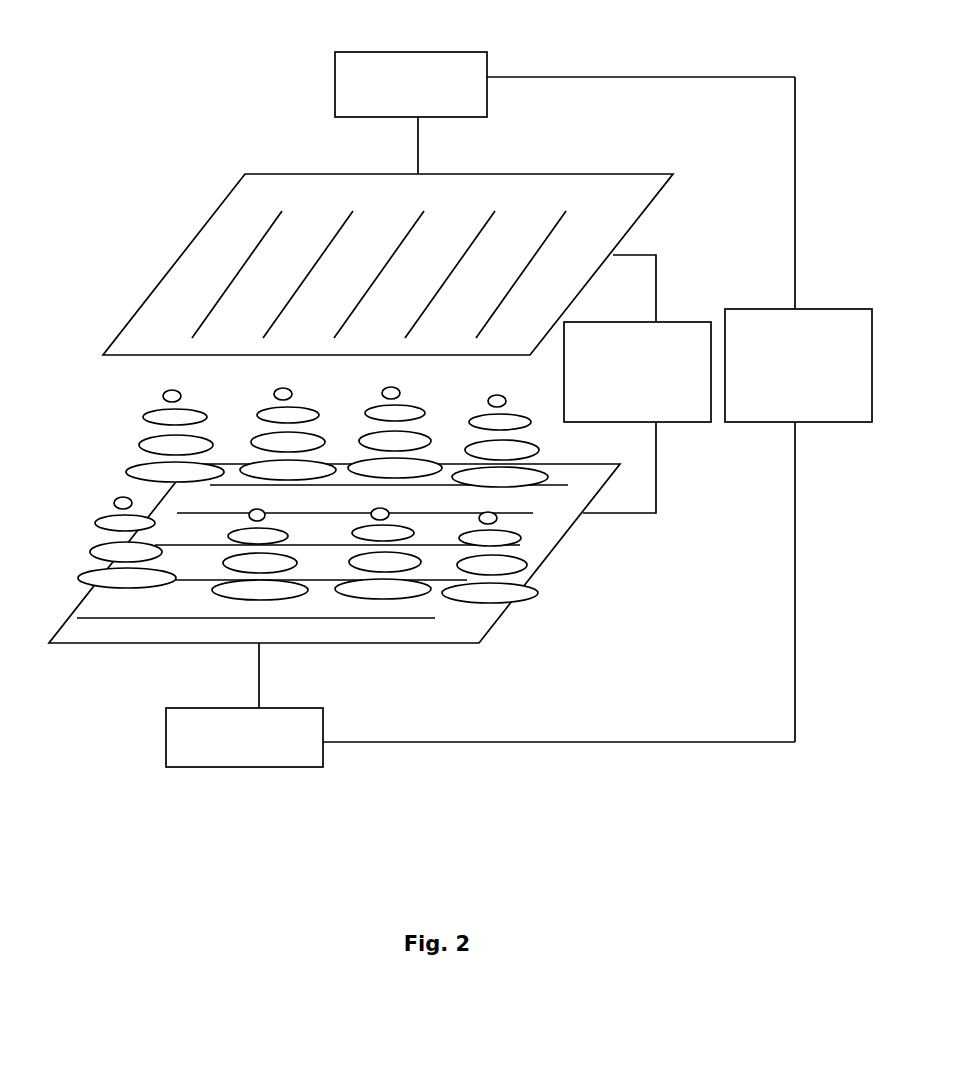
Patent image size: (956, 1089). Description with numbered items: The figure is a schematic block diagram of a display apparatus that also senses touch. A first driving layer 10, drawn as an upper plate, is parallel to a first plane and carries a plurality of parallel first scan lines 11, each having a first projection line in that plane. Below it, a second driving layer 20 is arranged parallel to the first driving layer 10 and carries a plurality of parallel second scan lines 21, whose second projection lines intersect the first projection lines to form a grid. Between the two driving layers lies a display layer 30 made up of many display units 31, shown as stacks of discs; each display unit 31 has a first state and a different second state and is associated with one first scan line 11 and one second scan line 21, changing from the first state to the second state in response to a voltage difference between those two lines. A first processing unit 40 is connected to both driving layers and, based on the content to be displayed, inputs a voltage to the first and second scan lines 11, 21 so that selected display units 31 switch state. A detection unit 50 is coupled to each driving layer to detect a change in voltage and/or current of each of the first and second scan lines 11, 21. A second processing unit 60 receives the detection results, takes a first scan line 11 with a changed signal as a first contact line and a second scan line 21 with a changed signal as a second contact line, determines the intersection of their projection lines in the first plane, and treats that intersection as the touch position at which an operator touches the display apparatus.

The first driving layer 10 is at (225, 200).
The first scan lines 11 is at (247, 258).
The second driving layer 20 is at (553, 553).
The second scan lines 21 is at (390, 619).
The display layer 30 is at (290, 489).
The display units 31 is at (98, 518).
The first processing unit 40 is at (676, 321).
The detection unit 50 is at (455, 51).
The second processing unit 60 is at (818, 308).